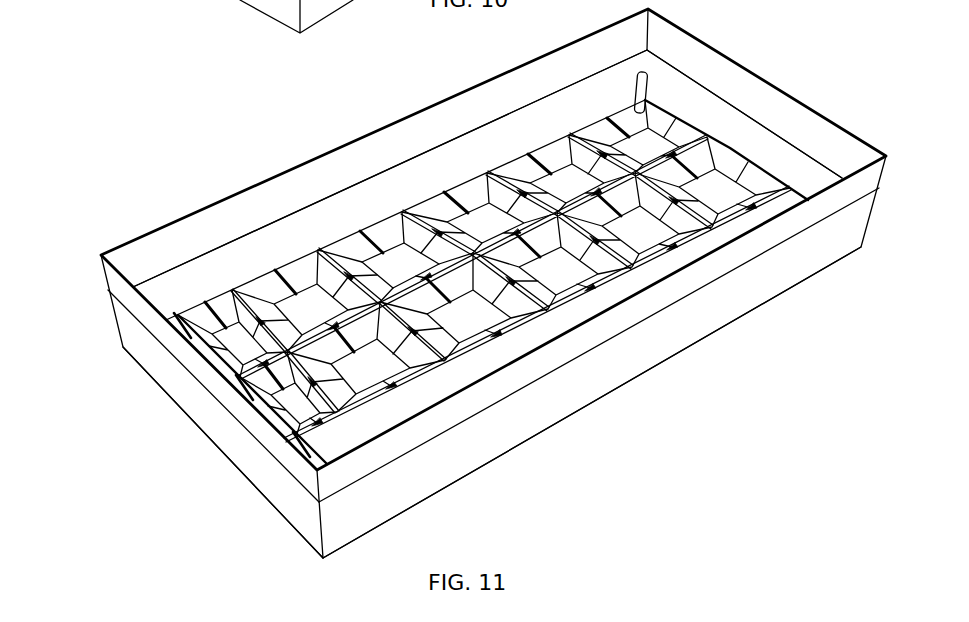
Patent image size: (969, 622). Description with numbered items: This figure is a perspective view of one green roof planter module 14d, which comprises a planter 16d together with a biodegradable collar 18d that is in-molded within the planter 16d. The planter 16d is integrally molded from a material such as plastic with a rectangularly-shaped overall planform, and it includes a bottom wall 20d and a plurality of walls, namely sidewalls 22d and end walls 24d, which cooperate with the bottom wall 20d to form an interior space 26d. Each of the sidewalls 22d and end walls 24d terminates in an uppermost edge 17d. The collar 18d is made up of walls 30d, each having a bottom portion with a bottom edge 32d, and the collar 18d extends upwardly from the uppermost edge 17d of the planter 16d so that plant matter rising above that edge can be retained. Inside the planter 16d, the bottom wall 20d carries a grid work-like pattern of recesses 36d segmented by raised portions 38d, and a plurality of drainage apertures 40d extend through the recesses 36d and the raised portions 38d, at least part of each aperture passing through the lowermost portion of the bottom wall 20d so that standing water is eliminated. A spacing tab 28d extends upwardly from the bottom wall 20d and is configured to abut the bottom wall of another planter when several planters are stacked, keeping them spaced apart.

The green roof planter module 14d is at (443, 267).
The planter 16d is at (108, 329).
The uppermost edge 17d is at (195, 379).
The biodegradable collar 18d is at (100, 276).
The bottom wall 20d is at (258, 285).
The sidewall 22d is at (575, 386).
The end wall 24d is at (240, 446).
The interior space 26d is at (723, 103).
The spacing tab 28d is at (632, 85).
The collar wall 30d is at (627, 322).
The bottom edge 32d is at (274, 218).
The recess 36d is at (385, 262).
The raised portion 38d is at (393, 258).
The drainage aperture 40d is at (458, 168).